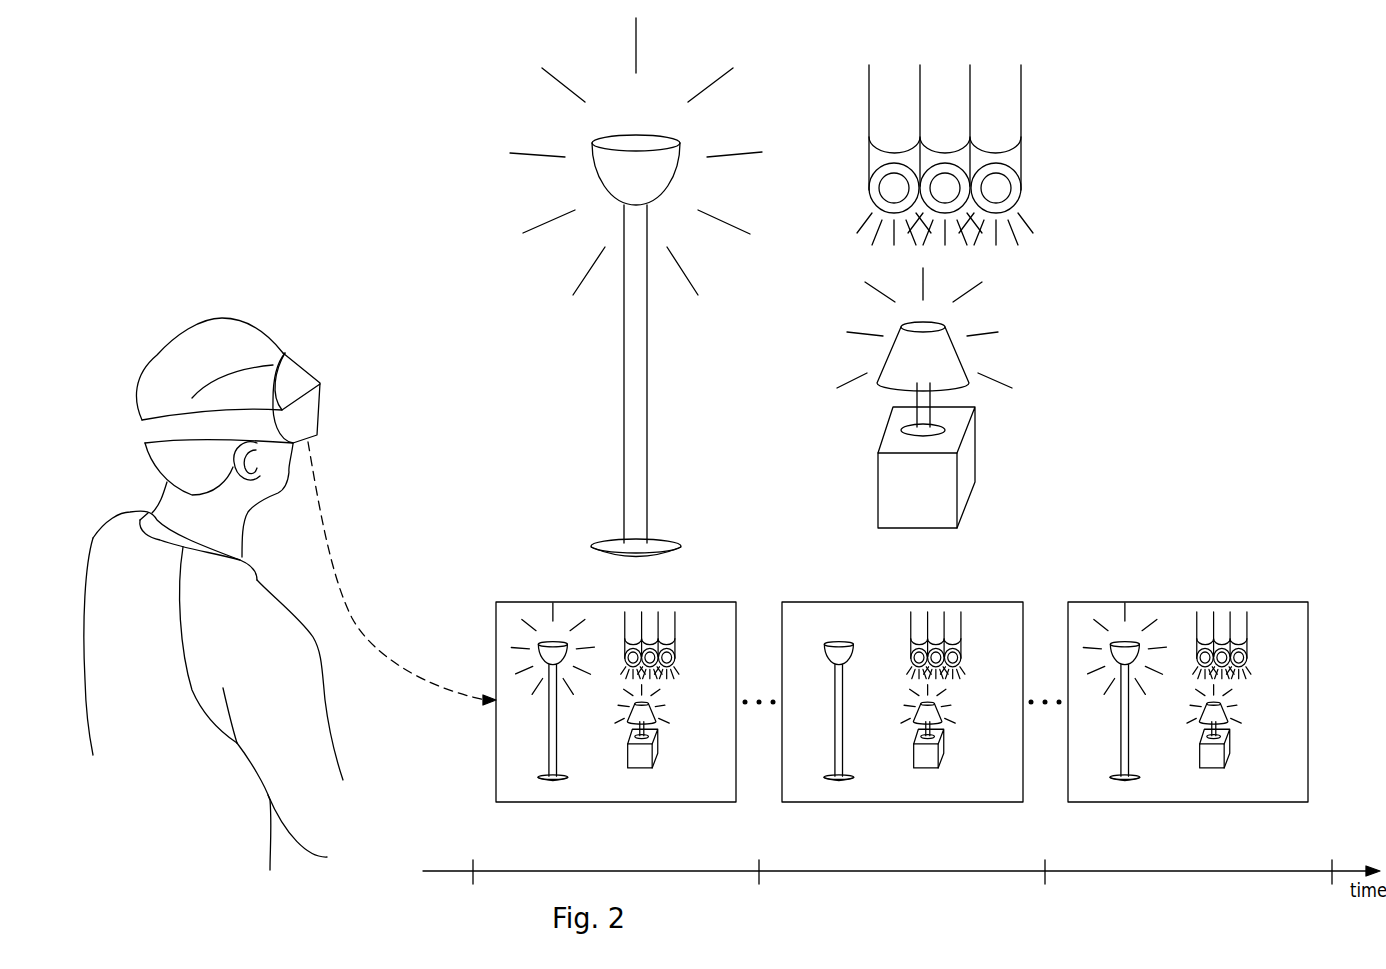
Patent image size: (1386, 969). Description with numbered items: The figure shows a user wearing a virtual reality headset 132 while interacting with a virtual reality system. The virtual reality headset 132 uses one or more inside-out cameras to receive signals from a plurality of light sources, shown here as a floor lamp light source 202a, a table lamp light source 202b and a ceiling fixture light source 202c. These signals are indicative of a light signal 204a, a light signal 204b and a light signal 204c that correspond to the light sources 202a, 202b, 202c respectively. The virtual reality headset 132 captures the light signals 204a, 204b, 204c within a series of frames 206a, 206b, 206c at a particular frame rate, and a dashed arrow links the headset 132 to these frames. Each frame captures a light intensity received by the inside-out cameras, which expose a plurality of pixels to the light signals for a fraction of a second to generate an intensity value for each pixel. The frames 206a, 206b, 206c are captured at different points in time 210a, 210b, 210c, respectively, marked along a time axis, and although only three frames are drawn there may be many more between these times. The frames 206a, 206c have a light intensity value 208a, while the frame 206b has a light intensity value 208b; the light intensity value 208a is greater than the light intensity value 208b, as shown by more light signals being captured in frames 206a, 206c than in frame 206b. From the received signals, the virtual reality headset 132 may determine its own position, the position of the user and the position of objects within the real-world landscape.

The virtual reality headset 132 is at (307, 370).
The light source 202a is at (649, 413).
The light signal 204a is at (553, 88).
The light source 202b is at (883, 357).
The light signal 204b is at (995, 332).
The light source 202c is at (1022, 143).
The light signal 204c is at (1027, 220).
The frame 206a is at (537, 602).
The frame 206b is at (827, 602).
The frame 206c is at (1112, 602).
The light intensity value 208a is at (522, 827).
The light intensity value 208b is at (808, 827).
The point in time 210a is at (778, 905).
The point in time 210b is at (1062, 905).
The point in time 210c is at (1315, 900).